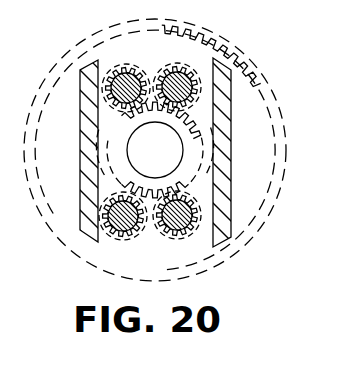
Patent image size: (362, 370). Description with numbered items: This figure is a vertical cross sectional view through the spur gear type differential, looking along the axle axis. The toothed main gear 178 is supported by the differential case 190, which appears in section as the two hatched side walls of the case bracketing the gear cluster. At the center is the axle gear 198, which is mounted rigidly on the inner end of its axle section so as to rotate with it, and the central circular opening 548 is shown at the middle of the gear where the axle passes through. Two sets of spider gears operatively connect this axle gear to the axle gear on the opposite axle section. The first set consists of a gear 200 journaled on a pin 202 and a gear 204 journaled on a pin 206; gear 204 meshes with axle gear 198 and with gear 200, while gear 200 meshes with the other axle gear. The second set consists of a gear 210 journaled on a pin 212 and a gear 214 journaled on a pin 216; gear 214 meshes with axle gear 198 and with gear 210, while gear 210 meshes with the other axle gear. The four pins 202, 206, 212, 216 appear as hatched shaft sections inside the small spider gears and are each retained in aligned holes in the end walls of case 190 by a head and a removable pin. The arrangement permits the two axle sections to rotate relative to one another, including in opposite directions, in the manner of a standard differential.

The main gear 178 is at (258, 81).
The differential case 190 is at (88, 144).
The axle gear 198 is at (194, 142).
The central bore 548 is at (158, 176).
The gear 200 is at (177, 67).
The pin 202 is at (192, 86).
The gear 204 is at (133, 50).
The pin 206 is at (112, 88).
The gear 210 is at (115, 232).
The pin 212 is at (110, 213).
The gear 214 is at (178, 235).
The pin 216 is at (193, 214).